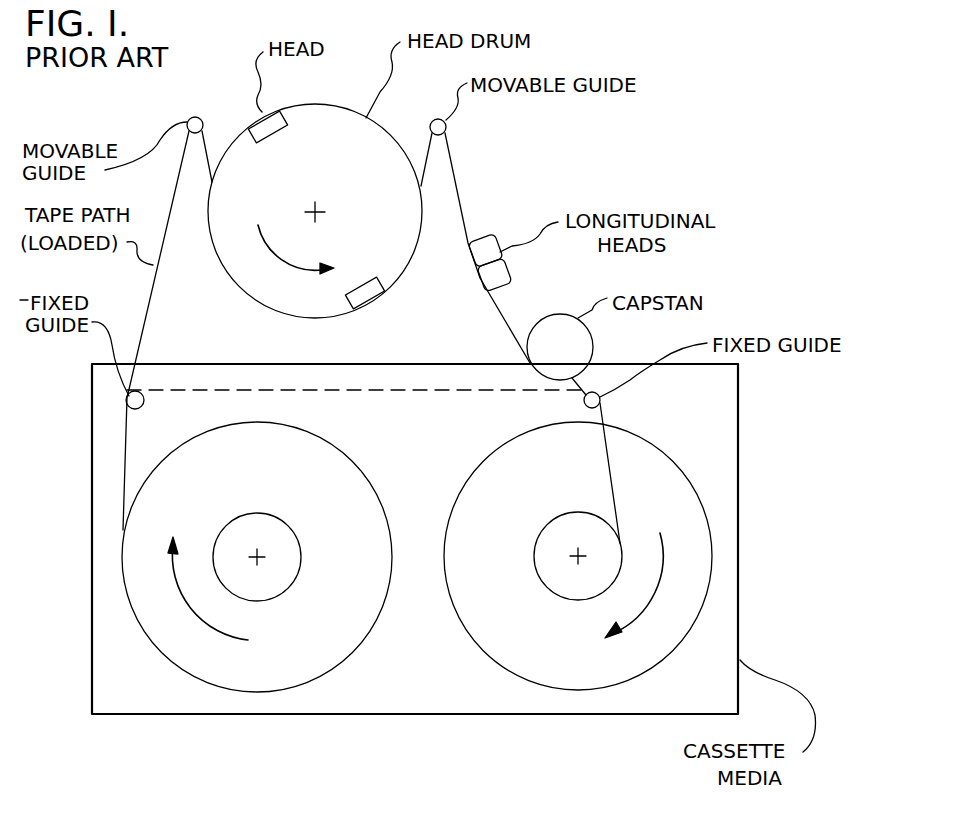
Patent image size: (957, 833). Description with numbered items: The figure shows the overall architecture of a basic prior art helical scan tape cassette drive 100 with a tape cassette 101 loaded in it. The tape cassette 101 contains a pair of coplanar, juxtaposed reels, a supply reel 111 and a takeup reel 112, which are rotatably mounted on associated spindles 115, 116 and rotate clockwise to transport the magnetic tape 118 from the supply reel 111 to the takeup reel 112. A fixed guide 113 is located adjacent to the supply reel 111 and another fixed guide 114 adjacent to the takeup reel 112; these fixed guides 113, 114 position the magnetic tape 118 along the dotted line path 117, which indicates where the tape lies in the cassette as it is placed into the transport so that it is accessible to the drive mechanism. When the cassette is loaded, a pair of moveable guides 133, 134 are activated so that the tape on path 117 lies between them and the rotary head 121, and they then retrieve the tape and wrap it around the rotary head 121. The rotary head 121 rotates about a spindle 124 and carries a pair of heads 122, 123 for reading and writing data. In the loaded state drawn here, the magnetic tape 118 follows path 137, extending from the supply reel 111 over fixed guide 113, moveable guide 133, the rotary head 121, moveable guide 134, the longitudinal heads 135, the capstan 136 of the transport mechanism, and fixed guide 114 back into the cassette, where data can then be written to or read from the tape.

The helical scan tape cassette drive 100 is at (712, 166).
The tape cassette 101 is at (92, 640).
The supply reel 111 is at (372, 482).
The takeup reel 112 is at (506, 438).
The fixed guide 113 is at (143, 402).
The fixed guide 114 is at (584, 400).
The spindle 115 is at (262, 565).
The spindle 116 is at (570, 560).
The dotted line path 117 is at (380, 392).
The magnetic tape 118 is at (604, 406).
The rotary head 121 is at (325, 104).
The head 122 is at (282, 137).
The head 123 is at (350, 298).
The spindle 124 is at (322, 213).
The moveable guide 133 is at (199, 133).
The moveable guide 134 is at (447, 131).
The longitudinal heads 135 is at (483, 240).
The capstan 136 is at (593, 342).
The path 137 is at (147, 333).